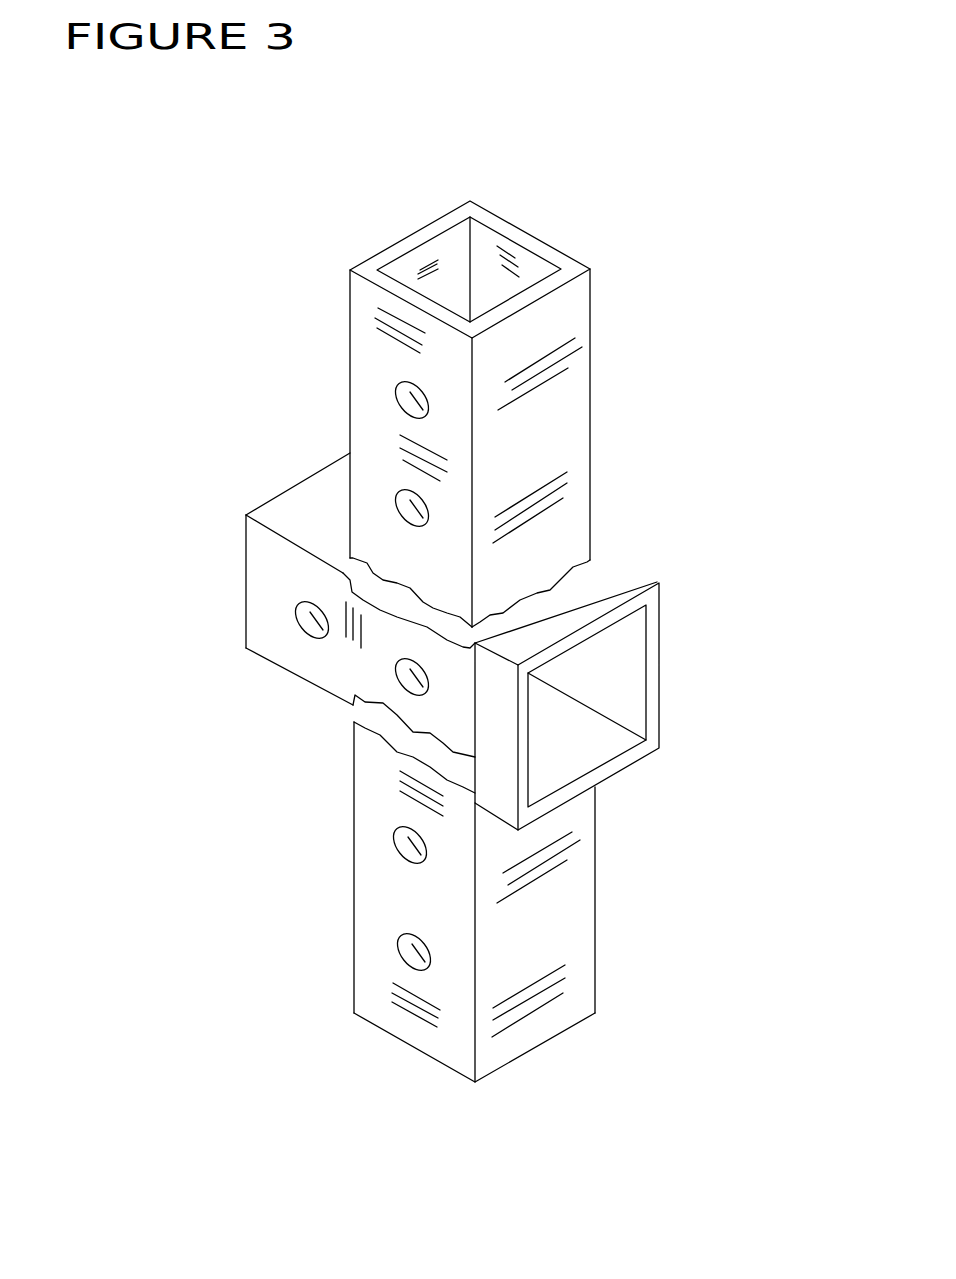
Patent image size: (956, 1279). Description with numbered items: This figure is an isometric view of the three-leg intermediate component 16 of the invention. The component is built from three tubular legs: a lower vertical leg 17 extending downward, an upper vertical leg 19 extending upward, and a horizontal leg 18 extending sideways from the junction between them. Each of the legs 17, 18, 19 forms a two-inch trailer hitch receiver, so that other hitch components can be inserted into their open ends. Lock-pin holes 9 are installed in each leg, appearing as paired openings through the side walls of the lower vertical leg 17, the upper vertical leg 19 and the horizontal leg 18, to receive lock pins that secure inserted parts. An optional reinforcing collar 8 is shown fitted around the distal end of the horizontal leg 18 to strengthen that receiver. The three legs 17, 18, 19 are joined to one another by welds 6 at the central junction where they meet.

The three-leg intermediate component 16 is at (597, 307).
The lower vertical leg 17 is at (558, 948).
The horizontal leg 18 is at (273, 578).
The upper vertical leg 19 is at (565, 430).
The reinforcing collar 8 is at (623, 580).
The lock-pin holes 9 is at (400, 497).
The welds 6 is at (347, 561).